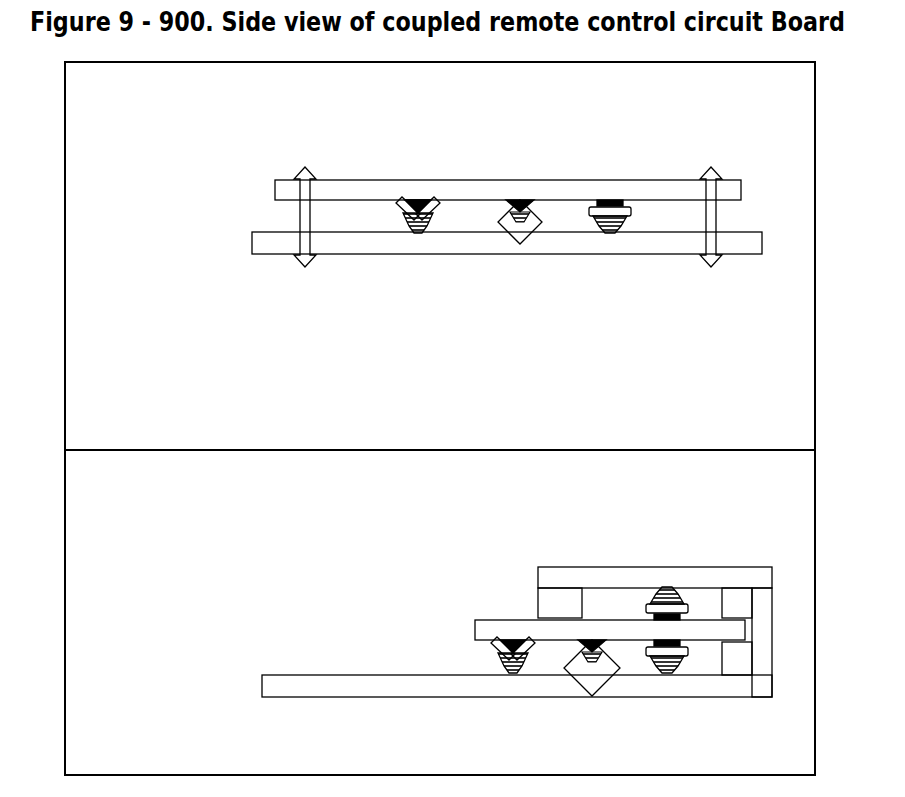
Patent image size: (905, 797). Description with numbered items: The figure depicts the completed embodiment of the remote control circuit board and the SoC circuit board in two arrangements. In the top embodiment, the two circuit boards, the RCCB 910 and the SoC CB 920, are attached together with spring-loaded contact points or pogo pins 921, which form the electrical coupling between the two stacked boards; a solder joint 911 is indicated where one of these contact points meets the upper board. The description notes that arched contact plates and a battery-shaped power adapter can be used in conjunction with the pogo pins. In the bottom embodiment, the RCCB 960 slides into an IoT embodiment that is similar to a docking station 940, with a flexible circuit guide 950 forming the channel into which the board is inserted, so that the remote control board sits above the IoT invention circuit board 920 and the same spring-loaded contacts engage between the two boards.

The remote control circuit board 910 is at (266, 189).
The solder joint 911 is at (422, 198).
The SoC circuit board 920 is at (250, 247).
The spring loaded contact points or pogo pins 921 is at (601, 237).
The docking station 940 is at (433, 585).
The flexible circuit guide 950 is at (533, 604).
The remote control circuit board 960 is at (470, 630).